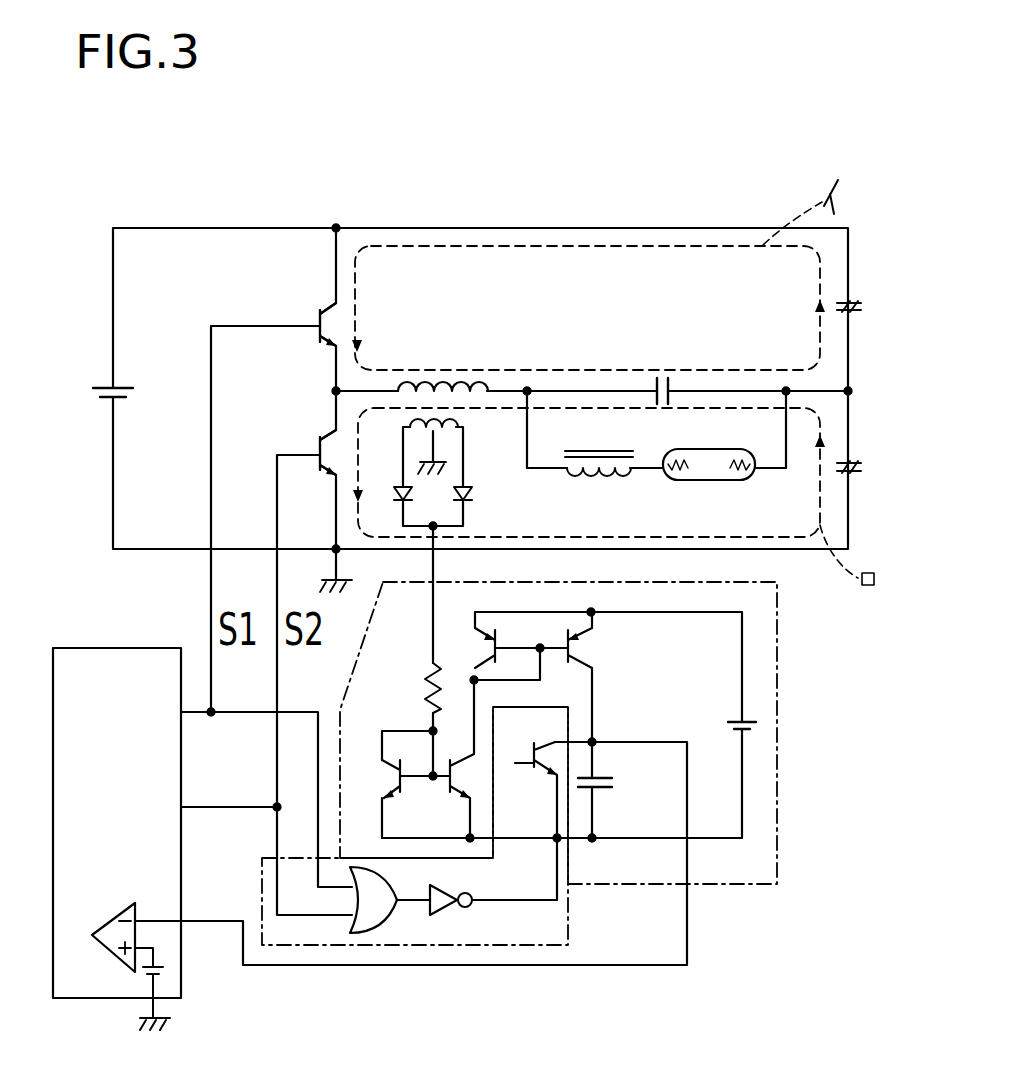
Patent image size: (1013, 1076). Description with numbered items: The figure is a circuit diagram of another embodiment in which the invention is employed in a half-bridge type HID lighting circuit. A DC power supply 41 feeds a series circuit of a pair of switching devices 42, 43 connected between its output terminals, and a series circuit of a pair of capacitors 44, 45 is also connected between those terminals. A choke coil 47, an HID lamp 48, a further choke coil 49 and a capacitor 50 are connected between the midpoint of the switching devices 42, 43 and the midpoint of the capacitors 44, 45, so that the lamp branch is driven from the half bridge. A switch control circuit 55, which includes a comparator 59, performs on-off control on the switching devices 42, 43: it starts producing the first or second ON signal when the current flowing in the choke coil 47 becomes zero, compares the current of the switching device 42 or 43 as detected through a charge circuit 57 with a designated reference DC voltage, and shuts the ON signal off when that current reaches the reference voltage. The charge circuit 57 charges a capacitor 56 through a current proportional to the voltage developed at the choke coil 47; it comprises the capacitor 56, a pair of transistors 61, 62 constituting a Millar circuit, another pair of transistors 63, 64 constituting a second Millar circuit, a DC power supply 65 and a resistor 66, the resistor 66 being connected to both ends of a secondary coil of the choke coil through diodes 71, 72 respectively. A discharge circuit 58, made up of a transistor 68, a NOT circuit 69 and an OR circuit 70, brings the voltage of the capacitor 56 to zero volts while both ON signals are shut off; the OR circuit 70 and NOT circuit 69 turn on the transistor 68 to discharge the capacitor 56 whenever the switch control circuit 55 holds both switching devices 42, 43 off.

The DC power supply 41 is at (110, 386).
The switching device 42 is at (319, 316).
The switching device 43 is at (318, 450).
The capacitor 44 is at (851, 304).
The capacitor 45 is at (852, 464).
The choke coil 47 is at (437, 392).
The HID lamp 48 is at (720, 481).
The choke coil 49 is at (590, 474).
The capacitor 50 is at (668, 382).
The switch control circuit 55 is at (56, 640).
The capacitor 56 is at (604, 790).
The charge circuit 57 is at (785, 710).
The discharge circuit 58 is at (453, 950).
The comparator 59 is at (106, 948).
The switching device 61 is at (392, 777).
The switching device 62 is at (448, 786).
The switching device 63 is at (486, 642).
The switching device 64 is at (576, 654).
The DC power supply 65 is at (757, 720).
The resistor 66 is at (426, 690).
The transistor 68 is at (515, 764).
The NOT circuit 69 is at (425, 918).
The OR circuit 70 is at (373, 932).
The diode 71 is at (398, 498).
The diode 72 is at (474, 493).